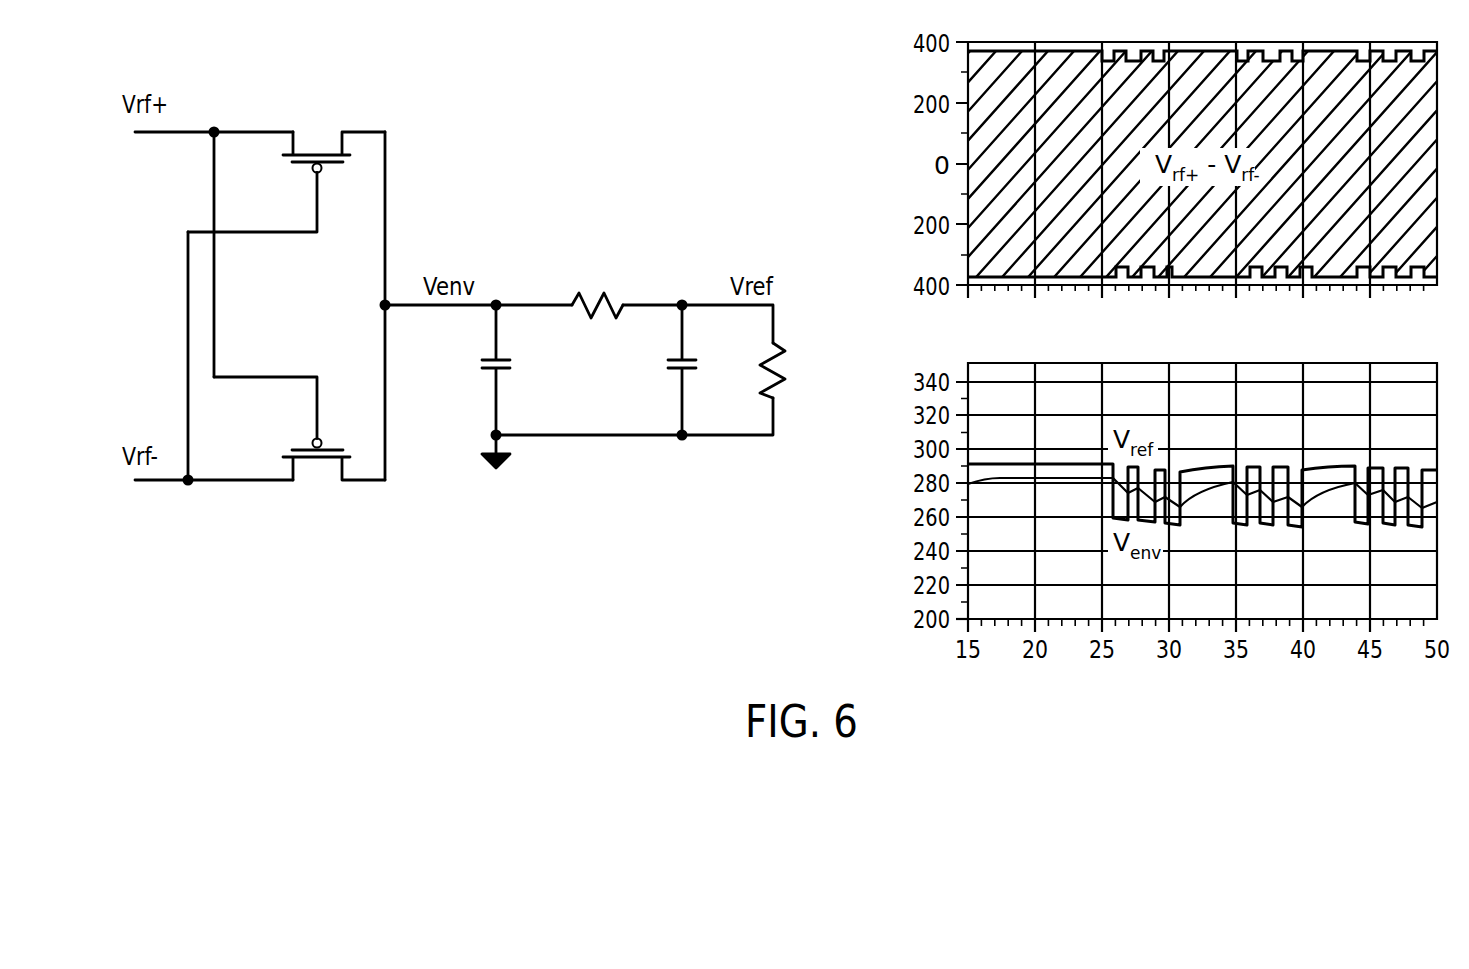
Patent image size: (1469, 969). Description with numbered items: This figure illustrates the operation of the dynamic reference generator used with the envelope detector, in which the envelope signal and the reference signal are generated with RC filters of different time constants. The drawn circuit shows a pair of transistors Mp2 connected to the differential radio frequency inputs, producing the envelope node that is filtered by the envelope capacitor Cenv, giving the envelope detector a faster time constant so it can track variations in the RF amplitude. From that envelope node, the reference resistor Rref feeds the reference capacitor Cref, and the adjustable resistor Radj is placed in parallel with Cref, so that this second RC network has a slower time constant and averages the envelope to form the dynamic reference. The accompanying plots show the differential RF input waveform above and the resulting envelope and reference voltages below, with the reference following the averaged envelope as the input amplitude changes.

The PMOS transistor Mp2 is at (286, 303).
The reference resistor 180 k Rref is at (599, 306).
The envelope capacitor 30 f Cenv is at (521, 370).
The reference capacitor 560 f Cref is at (707, 370).
The adjustable resistor 8.8 M Radj is at (805, 372).